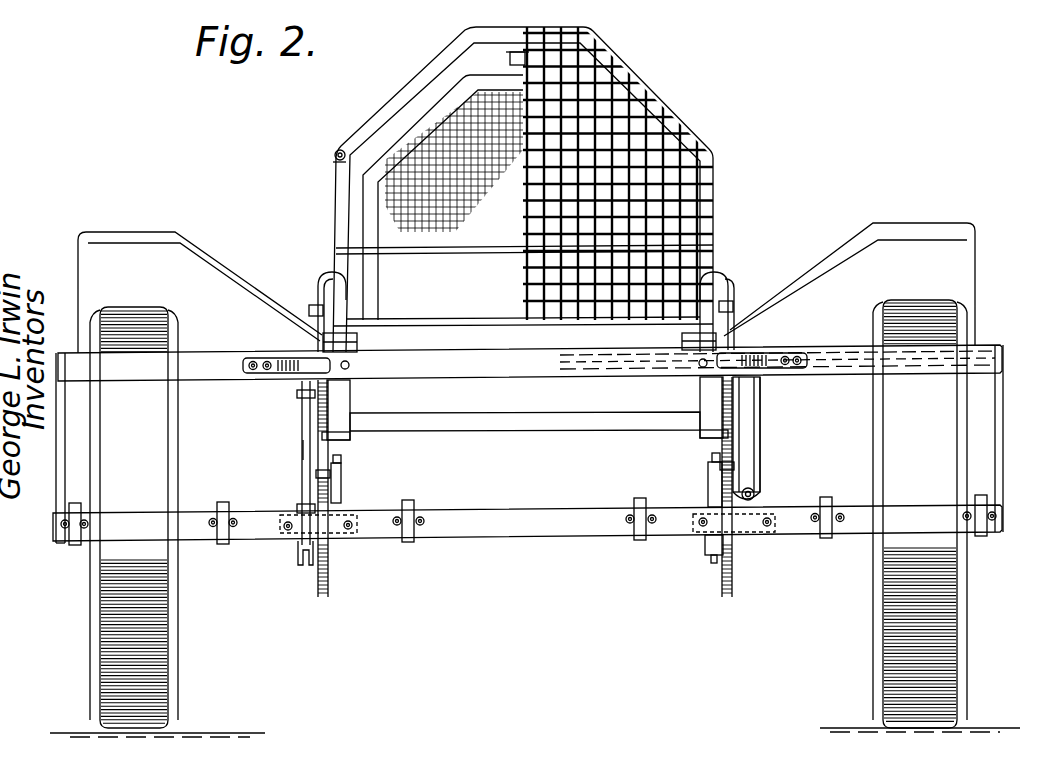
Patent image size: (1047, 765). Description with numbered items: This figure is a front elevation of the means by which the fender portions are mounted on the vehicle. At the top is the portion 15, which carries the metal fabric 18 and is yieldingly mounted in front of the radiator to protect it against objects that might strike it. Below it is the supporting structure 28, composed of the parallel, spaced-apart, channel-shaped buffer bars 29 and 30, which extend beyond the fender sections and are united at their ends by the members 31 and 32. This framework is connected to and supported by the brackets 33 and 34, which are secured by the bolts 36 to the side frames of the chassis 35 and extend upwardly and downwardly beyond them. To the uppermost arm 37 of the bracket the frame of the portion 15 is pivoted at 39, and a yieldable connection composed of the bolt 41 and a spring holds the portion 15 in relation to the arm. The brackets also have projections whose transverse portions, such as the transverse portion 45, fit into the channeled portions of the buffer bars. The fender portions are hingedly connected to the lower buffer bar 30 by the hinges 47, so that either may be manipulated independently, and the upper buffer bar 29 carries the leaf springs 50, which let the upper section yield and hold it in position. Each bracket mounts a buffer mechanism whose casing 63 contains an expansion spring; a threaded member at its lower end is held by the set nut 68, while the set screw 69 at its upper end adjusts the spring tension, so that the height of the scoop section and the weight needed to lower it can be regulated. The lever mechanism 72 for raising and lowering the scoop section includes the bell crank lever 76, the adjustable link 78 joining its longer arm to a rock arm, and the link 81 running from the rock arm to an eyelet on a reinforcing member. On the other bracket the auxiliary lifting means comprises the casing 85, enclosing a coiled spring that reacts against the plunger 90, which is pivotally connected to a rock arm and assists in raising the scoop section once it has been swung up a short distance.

The portion 15 is at (663, 58).
The metal fabric 18 is at (713, 229).
The supporting structure 28 is at (525, 449).
The buffer bar 29 is at (527, 380).
The buffer bar 30 is at (527, 536).
The member 31 is at (55, 497).
The member 32 is at (1004, 485).
The bracket 33 is at (329, 455).
The bracket 34 is at (721, 450).
The side frame of the chassis 35 is at (351, 397).
The bolt 36 is at (303, 406).
The uppermost arm 37 is at (319, 280).
The pivot 39 is at (311, 306).
The bolt 41 is at (333, 163).
The transverse portion 45 is at (350, 365).
The hinge 47 is at (408, 545).
The leaf spring 50 is at (273, 375).
The casing 63 is at (342, 486).
The set nut 68 is at (316, 476).
The set screw 69 is at (342, 462).
The lever mechanism 72 is at (297, 507).
The bell crank lever 76 is at (352, 516).
The link 78 is at (303, 449).
The link 81 is at (299, 560).
The casing 85 is at (762, 448).
The plunger 90 is at (338, 150).